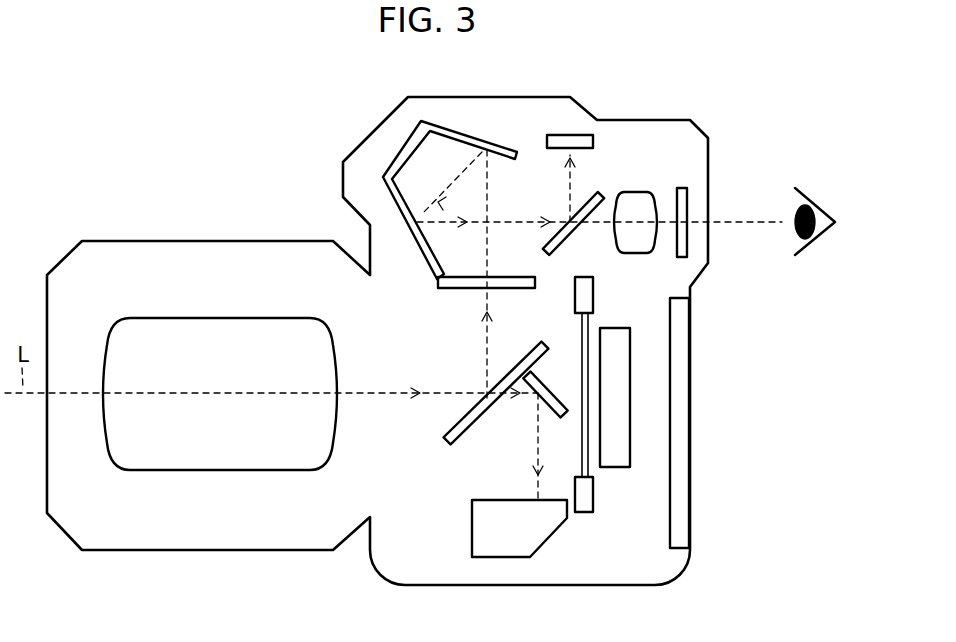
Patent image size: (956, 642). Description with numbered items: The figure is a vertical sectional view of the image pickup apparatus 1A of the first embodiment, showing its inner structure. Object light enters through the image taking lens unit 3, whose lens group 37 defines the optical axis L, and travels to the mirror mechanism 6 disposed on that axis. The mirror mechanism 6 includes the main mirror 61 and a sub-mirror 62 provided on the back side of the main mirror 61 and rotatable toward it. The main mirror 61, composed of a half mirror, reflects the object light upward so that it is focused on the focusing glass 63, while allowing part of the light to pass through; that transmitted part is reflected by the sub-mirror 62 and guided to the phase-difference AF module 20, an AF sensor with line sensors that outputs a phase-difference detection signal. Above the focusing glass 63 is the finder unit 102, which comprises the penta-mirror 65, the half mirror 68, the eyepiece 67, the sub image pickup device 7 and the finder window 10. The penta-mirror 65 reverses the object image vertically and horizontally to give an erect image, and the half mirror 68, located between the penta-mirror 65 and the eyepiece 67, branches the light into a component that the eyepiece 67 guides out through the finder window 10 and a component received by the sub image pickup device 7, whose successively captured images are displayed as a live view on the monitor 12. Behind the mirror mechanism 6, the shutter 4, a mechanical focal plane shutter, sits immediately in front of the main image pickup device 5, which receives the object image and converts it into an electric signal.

The image pickup apparatus 1A is at (182, 151).
The image taking lens unit 3 is at (204, 555).
The shutter 4 is at (582, 513).
The main image pickup device 5 is at (618, 328).
The mirror mechanism 6 is at (451, 454).
The sub image pickup device 7 is at (573, 136).
The finder window 10 is at (692, 198).
The monitor 12 is at (690, 422).
The phase-difference AF module 20 is at (498, 558).
The lens group 37 is at (220, 318).
The main mirror 61 is at (449, 434).
The sub-mirror 62 is at (557, 388).
The focusing glass 63 is at (453, 289).
The penta-mirror 65 is at (442, 117).
The eyepiece 67 is at (651, 197).
The half mirror 68 is at (606, 195).
The finder unit 102 is at (532, 138).